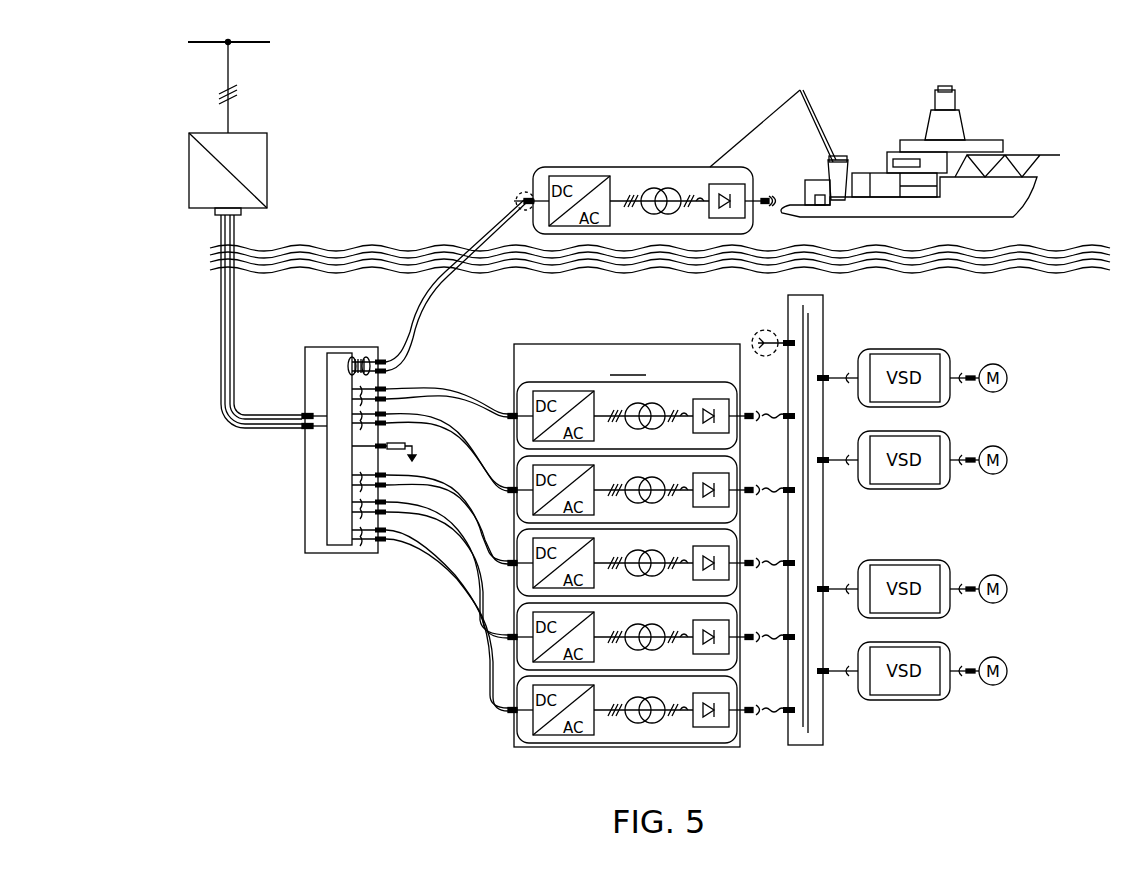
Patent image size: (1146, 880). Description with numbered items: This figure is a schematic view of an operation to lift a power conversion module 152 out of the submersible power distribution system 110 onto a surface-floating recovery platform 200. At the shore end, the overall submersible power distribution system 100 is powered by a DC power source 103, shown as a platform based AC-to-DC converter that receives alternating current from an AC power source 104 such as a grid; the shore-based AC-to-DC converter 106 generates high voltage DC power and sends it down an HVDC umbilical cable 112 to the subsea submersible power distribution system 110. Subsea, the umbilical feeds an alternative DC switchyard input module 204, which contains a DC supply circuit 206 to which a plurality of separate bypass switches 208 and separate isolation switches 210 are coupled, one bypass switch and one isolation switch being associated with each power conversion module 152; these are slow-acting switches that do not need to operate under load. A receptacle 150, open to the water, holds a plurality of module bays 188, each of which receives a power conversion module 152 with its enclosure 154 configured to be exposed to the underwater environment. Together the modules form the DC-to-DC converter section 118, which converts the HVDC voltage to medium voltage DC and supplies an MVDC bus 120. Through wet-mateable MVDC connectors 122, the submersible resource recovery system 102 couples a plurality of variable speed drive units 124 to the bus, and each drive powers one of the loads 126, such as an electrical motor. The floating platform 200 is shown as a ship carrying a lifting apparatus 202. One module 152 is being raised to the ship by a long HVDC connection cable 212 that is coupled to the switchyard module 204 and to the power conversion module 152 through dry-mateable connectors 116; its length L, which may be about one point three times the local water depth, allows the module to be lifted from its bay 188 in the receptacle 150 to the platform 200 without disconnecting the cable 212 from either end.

The submersible power distribution system 100 is at (143, 90).
The submersible resource recovery system 102 is at (1000, 518).
The DC power source 103 is at (256, 91).
The AC power source 104 is at (256, 41).
The AC-to-DC converter 106 is at (268, 190).
The submersible power distribution system 110 is at (266, 587).
The HVDC umbilical cable 112 is at (221, 356).
The dry-mateable connectors 116 is at (525, 192).
The DC-to-DC converter section 118 is at (880, 551).
The MVDC bus 120 is at (828, 320).
The wet-mateable MVDC connectors 122 is at (767, 193).
The variable speed drive unit 124 is at (950, 693).
The loads 126 is at (1008, 665).
The receptacle 150 is at (586, 568).
The power conversion module 152 is at (572, 167).
The enclosure 154 is at (672, 447).
The module bays 188 is at (558, 746).
The surface-floating recovery platform 200 is at (885, 147).
The lifting apparatus 202 is at (835, 126).
The DC switchyard input module 204 is at (316, 450).
The DC supply circuit 206 is at (327, 454).
The bypass switch 208 is at (328, 352).
The isolation switch 210 is at (365, 345).
The long HVDC connection cable 212 is at (460, 252).